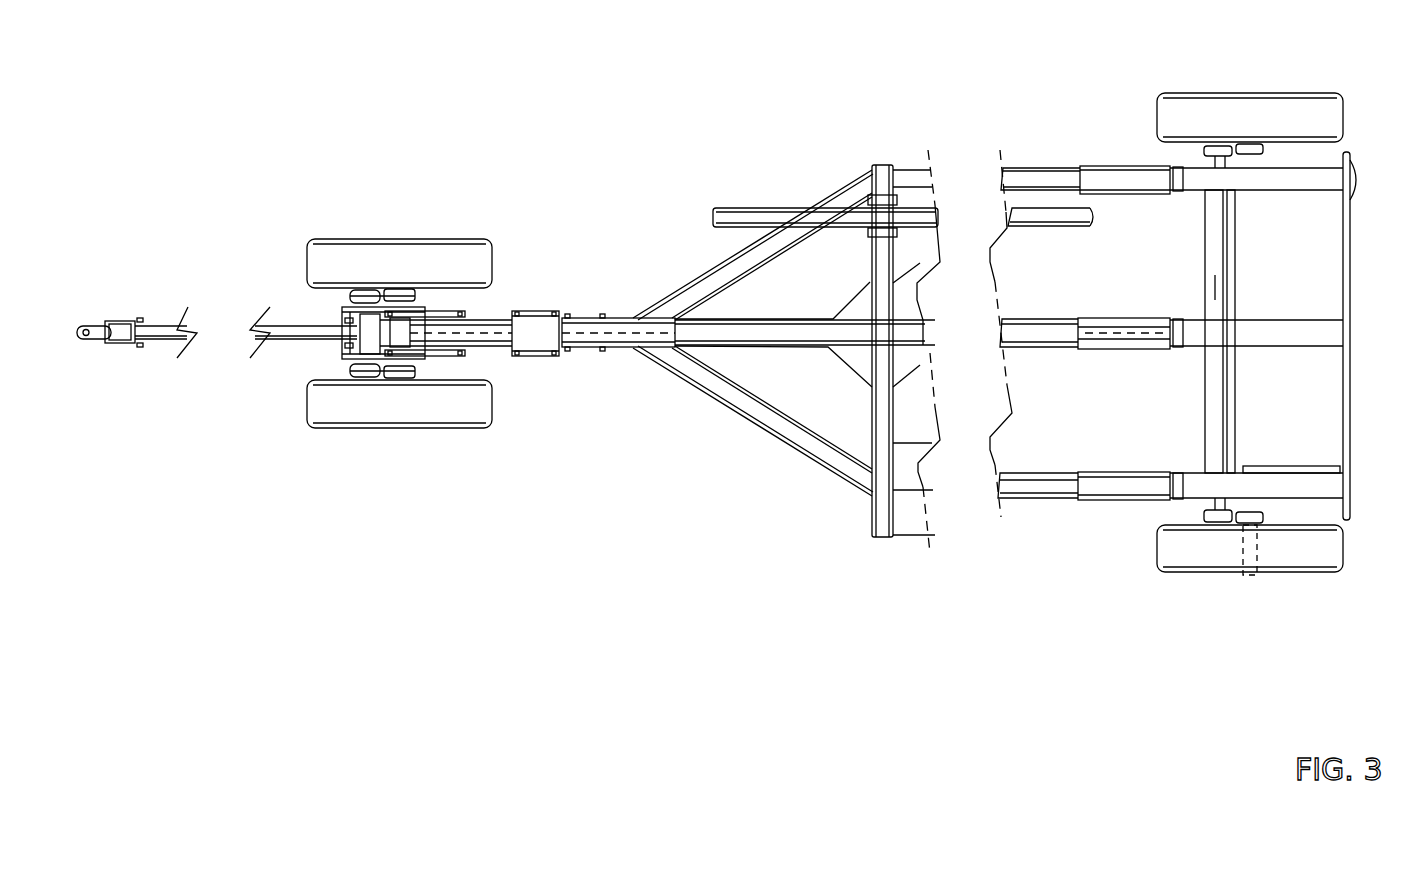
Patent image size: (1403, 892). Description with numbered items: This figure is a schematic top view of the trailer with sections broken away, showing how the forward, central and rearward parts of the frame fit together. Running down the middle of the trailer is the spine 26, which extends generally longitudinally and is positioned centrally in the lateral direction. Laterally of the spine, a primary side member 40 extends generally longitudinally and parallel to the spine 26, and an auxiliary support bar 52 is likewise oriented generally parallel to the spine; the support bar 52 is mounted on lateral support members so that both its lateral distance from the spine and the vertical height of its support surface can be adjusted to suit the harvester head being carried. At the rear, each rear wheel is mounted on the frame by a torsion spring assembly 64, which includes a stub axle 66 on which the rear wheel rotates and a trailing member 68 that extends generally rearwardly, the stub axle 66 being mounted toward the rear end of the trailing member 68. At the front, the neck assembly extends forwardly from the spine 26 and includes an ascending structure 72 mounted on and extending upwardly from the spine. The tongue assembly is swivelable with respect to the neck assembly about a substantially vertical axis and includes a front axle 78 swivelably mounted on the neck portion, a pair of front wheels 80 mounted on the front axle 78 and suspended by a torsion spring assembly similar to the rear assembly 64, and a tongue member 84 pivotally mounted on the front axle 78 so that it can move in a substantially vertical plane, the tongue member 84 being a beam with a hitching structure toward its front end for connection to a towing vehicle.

The spine 26 is at (745, 332).
The primary side member 40 is at (1038, 168).
The auxiliary support bar 52 is at (1027, 215).
The torsion spring assembly 64 is at (697, 483).
The stub axle 66 is at (1258, 548).
The trailing member 68 is at (378, 370).
The ascending structure 72 is at (592, 328).
The front axle 78 is at (370, 317).
The front wheel 80 is at (482, 262).
The tongue member 84 is at (160, 335).